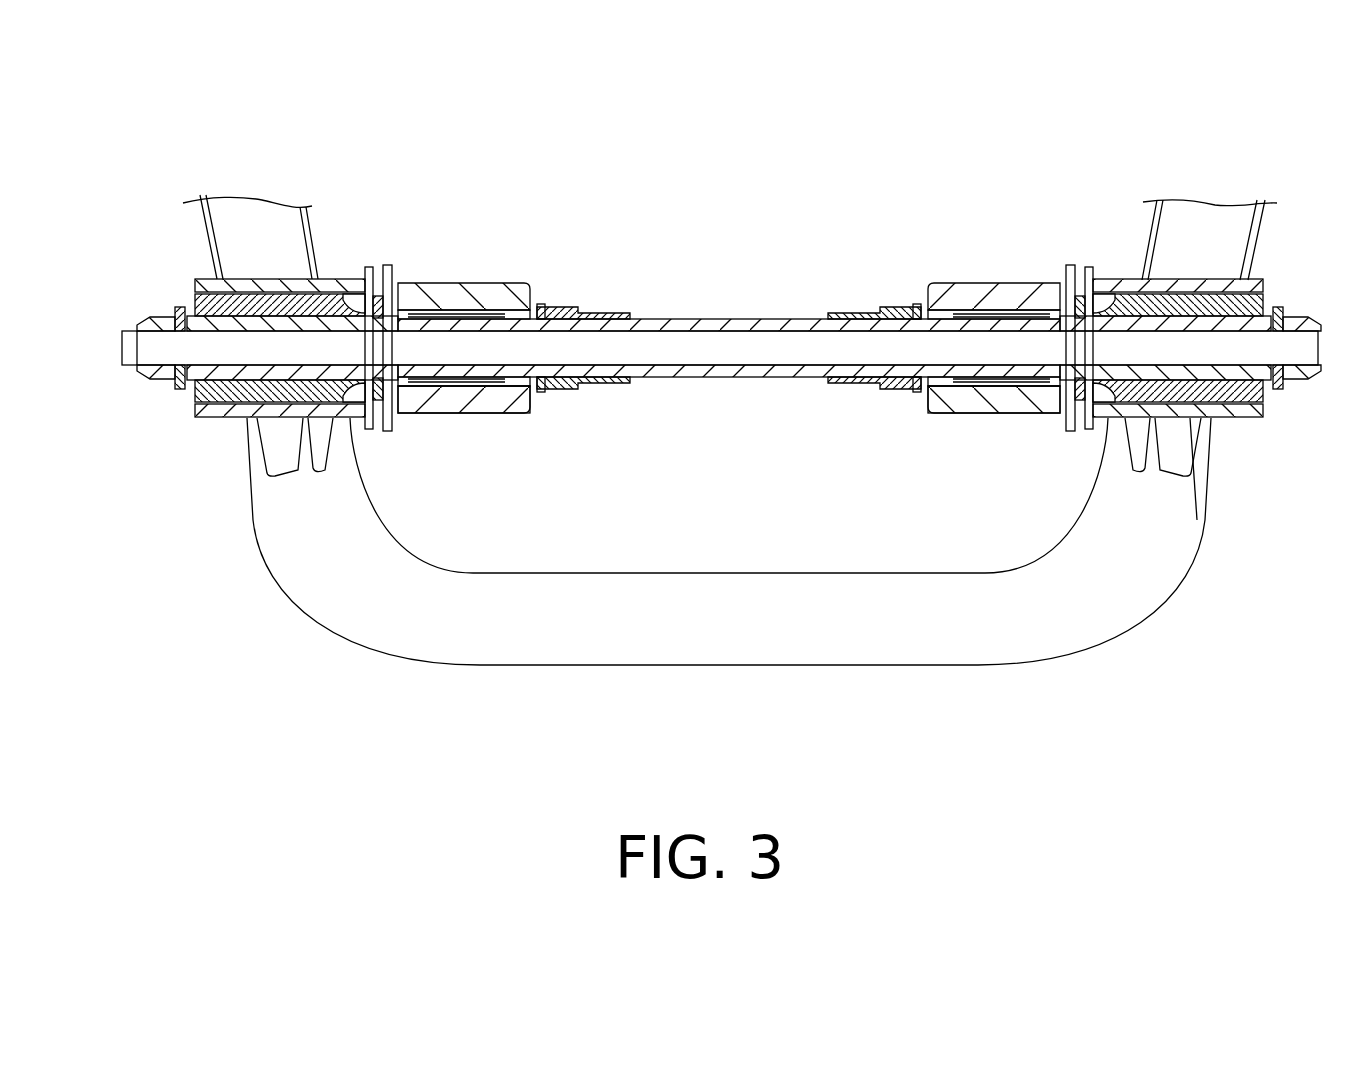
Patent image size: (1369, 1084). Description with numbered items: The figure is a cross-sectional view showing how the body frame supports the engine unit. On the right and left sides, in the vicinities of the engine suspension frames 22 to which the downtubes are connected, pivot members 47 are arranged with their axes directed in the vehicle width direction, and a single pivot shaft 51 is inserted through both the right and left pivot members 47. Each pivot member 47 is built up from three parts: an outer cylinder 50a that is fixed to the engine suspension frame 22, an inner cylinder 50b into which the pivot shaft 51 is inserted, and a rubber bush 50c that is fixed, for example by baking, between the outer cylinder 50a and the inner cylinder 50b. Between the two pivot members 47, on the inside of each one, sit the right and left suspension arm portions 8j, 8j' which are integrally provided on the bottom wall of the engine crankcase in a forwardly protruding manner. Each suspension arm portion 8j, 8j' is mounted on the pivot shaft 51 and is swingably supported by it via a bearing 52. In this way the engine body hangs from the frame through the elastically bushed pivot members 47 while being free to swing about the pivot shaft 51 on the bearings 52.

The engine suspension frame 22 is at (197, 227).
The pivot member 47 is at (223, 420).
The suspension arm portion 8j is at (514, 303).
The suspension arm portion 8j' is at (944, 290).
The outer cylinder 50a is at (342, 280).
The inner cylinder 50b is at (350, 435).
The rubber bush 50c is at (363, 488).
The pivot shaft 51 is at (763, 352).
The bearing 52 is at (512, 414).